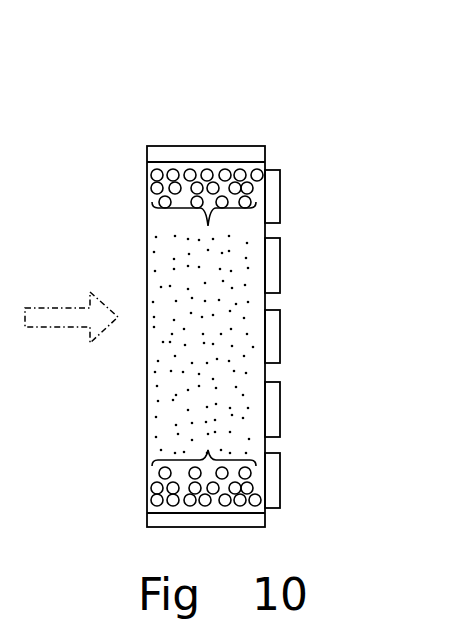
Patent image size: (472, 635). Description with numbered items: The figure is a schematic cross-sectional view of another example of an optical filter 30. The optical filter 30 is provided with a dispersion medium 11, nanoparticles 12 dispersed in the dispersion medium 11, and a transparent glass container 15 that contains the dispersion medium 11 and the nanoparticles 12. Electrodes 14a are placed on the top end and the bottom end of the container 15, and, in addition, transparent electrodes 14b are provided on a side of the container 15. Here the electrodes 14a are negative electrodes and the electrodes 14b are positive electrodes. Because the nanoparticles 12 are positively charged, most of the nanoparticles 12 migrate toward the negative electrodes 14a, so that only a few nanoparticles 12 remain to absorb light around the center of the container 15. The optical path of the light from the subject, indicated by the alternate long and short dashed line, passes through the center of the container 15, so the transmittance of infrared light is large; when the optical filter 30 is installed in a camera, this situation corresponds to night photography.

The optical filter 30 is at (215, 270).
The transparent glass container 15 is at (147, 223).
The electrodes 14a is at (257, 151).
The transparent electrodes 14b is at (271, 490).
The nanoparticles 12 is at (208, 226).
The dispersion medium 11 is at (184, 385).